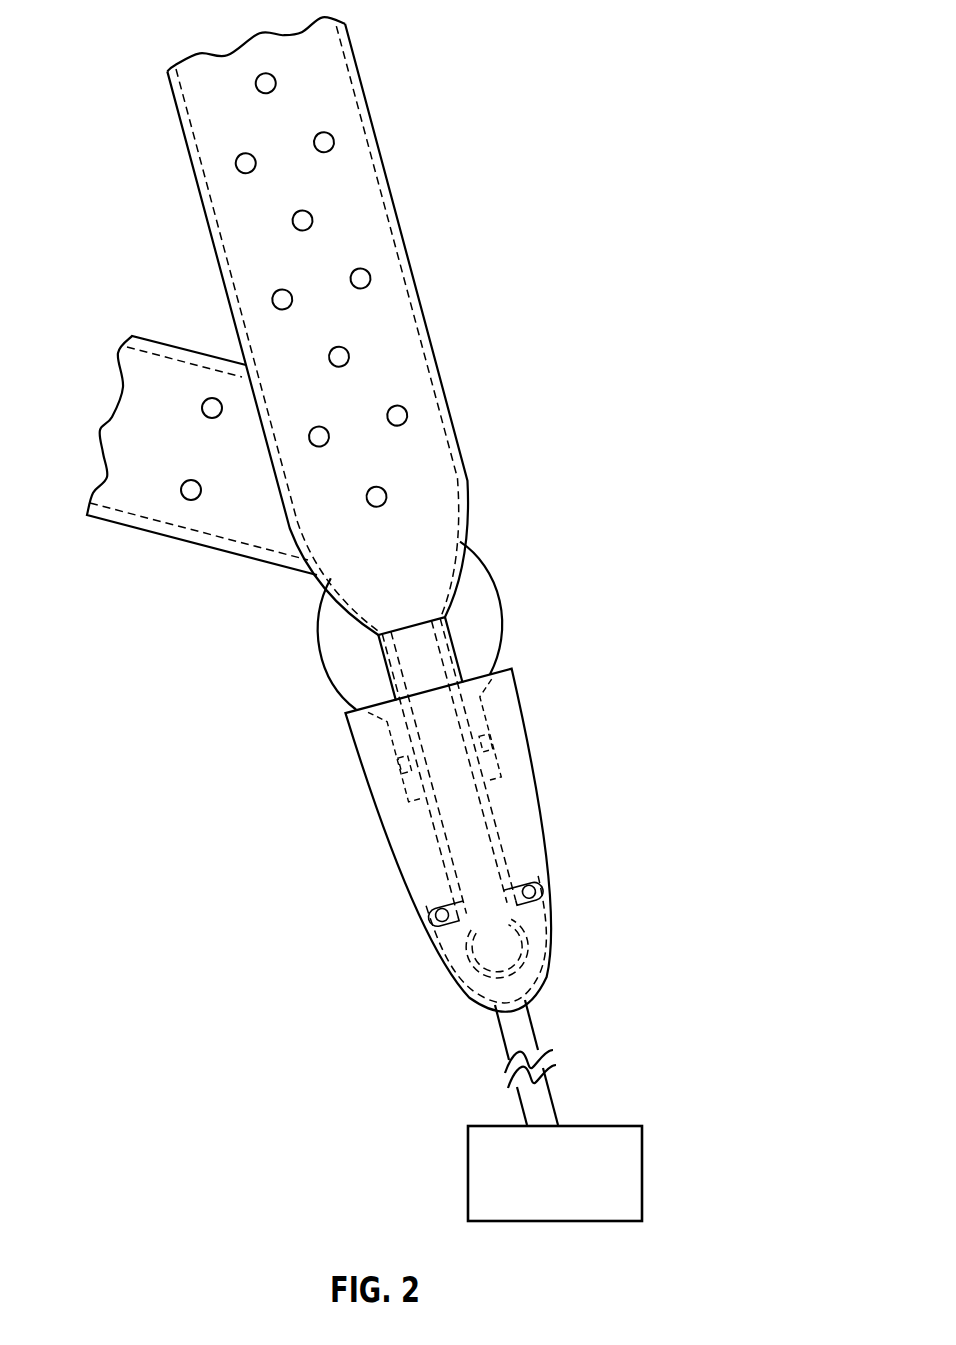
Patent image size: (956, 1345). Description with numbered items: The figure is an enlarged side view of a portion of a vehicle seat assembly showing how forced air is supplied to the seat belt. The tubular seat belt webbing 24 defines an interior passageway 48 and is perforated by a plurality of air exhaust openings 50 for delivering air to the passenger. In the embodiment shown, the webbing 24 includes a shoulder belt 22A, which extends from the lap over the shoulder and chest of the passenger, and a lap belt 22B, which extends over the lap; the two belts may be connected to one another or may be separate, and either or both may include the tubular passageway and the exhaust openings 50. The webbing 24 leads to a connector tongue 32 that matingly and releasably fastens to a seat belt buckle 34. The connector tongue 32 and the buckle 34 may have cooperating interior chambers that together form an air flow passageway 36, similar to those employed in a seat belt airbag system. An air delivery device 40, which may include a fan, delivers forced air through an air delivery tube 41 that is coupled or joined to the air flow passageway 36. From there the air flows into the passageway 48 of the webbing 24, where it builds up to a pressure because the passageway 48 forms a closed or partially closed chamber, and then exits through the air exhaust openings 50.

The shoulder belt 22A is at (237, 227).
The lap belt 22B is at (235, 513).
The tubular seat belt webbing 24 is at (387, 373).
The air exhaust openings 50 is at (303, 220).
The passageway 48 is at (417, 547).
The connector tongue 32 is at (465, 650).
The seat belt buckle 34 is at (519, 797).
The air flow passageway 36 is at (472, 853).
The air delivery device 40 is at (467, 1153).
The air delivery tube 41 is at (537, 1022).